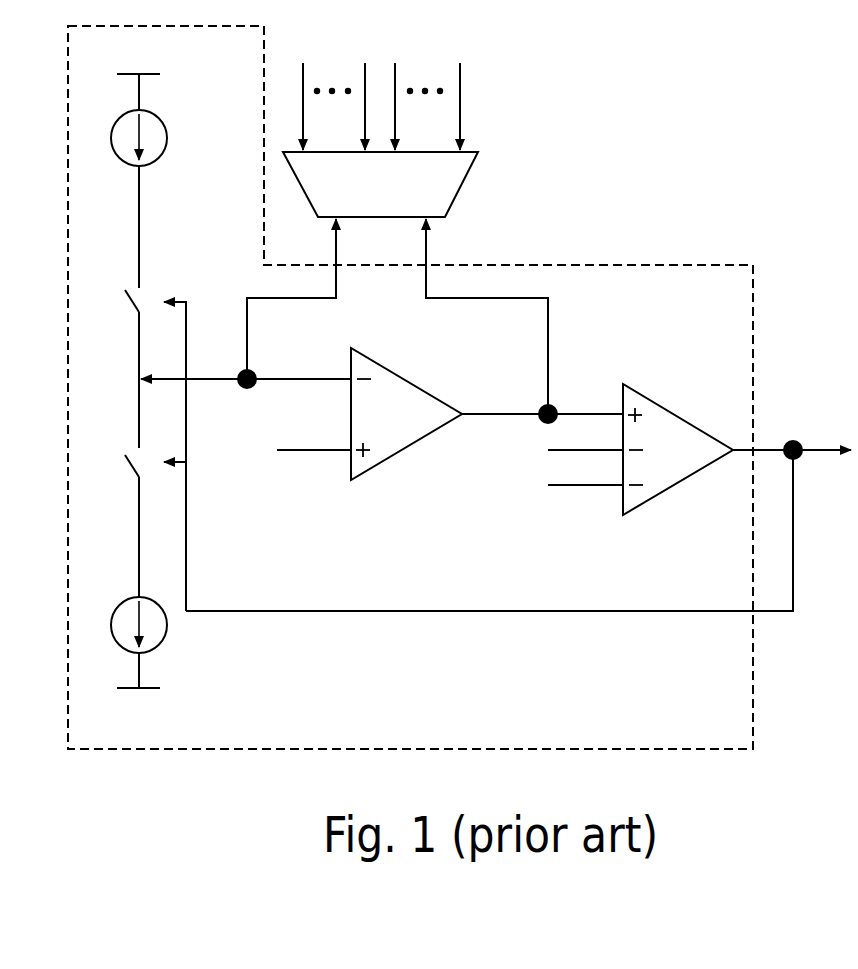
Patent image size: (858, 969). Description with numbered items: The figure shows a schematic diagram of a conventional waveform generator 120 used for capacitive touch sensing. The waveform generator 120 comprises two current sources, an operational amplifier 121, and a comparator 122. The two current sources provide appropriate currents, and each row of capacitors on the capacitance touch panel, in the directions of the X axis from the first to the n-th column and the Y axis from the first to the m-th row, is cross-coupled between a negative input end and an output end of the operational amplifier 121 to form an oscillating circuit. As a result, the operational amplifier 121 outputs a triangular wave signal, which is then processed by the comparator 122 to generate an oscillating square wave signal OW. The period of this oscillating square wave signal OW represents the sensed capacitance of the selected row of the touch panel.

The conventional waveform generator 120 is at (459, 385).
The operational amplifier 121 is at (407, 447).
The comparator 122 is at (680, 485).